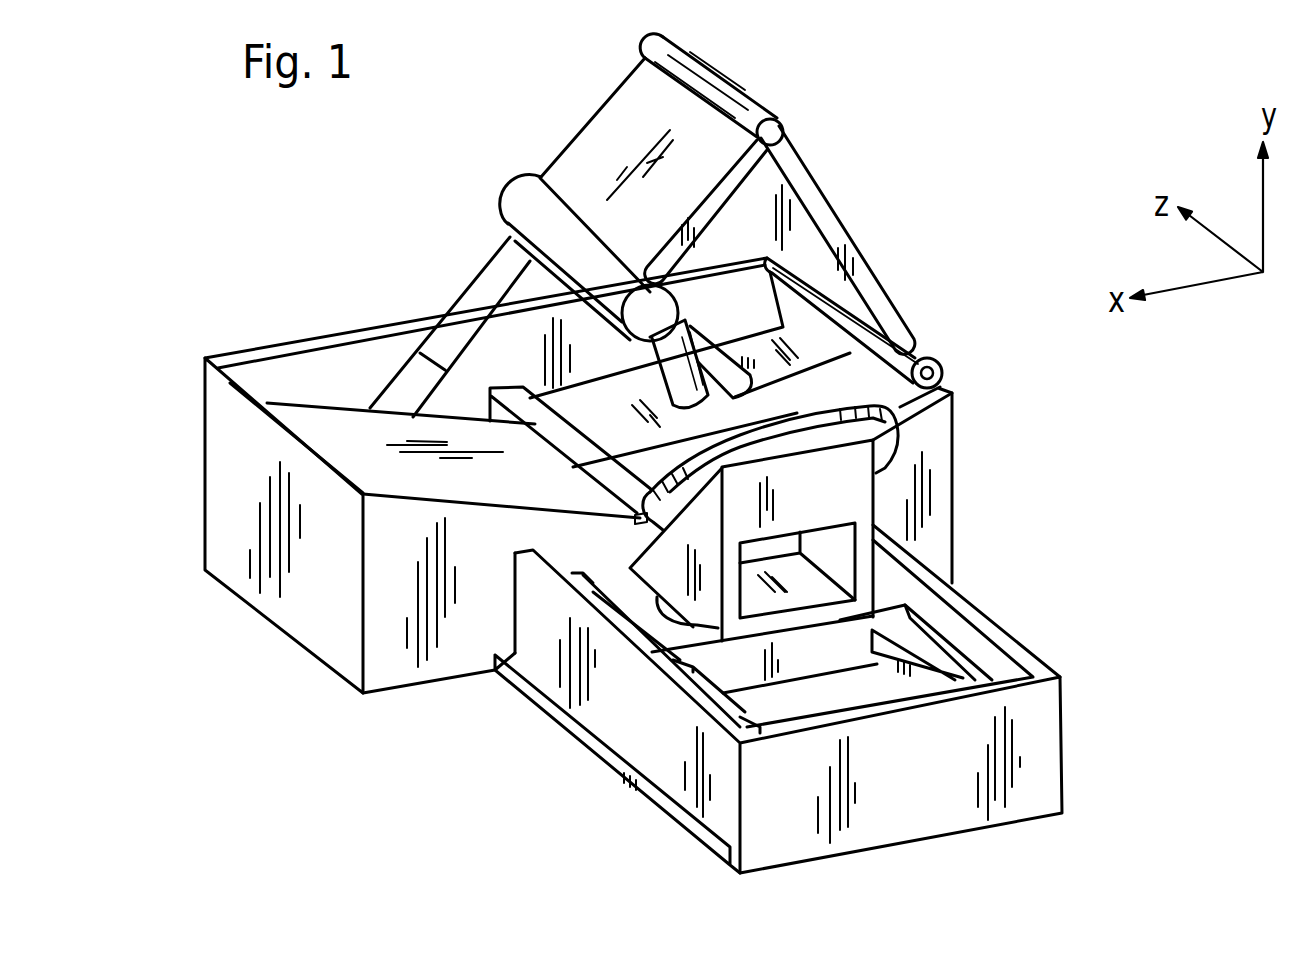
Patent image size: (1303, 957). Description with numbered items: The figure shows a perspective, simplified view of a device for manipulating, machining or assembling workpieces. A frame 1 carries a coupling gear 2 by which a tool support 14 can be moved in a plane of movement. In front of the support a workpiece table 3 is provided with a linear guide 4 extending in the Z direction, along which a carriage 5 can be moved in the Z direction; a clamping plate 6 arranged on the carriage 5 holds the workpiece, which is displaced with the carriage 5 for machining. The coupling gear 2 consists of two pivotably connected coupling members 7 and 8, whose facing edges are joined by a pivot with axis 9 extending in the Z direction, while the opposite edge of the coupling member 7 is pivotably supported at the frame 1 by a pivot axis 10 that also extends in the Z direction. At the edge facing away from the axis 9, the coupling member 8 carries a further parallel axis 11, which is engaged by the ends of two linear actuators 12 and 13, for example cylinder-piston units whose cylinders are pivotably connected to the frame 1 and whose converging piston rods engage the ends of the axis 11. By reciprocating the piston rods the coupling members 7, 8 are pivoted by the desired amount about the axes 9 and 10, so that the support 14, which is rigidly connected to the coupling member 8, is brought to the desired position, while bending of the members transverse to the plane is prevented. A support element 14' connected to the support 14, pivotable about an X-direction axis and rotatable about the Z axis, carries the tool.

The frame 1 is at (927, 497).
The coupling gear 2 is at (852, 198).
The workpiece table 3 is at (1035, 765).
The linear guide 4 is at (925, 655).
The carriage 5 is at (848, 637).
The clamping plate 6 is at (888, 455).
The coupling member 7 is at (818, 278).
The coupling member 8 is at (612, 122).
The pivot axis 9 is at (781, 125).
The pivot axis 10 is at (942, 371).
The axis 11 is at (530, 258).
The linear actuator 12 is at (422, 367).
The linear actuator 13 is at (773, 392).
The support 14 is at (518, 166).
The support element 14' is at (644, 346).